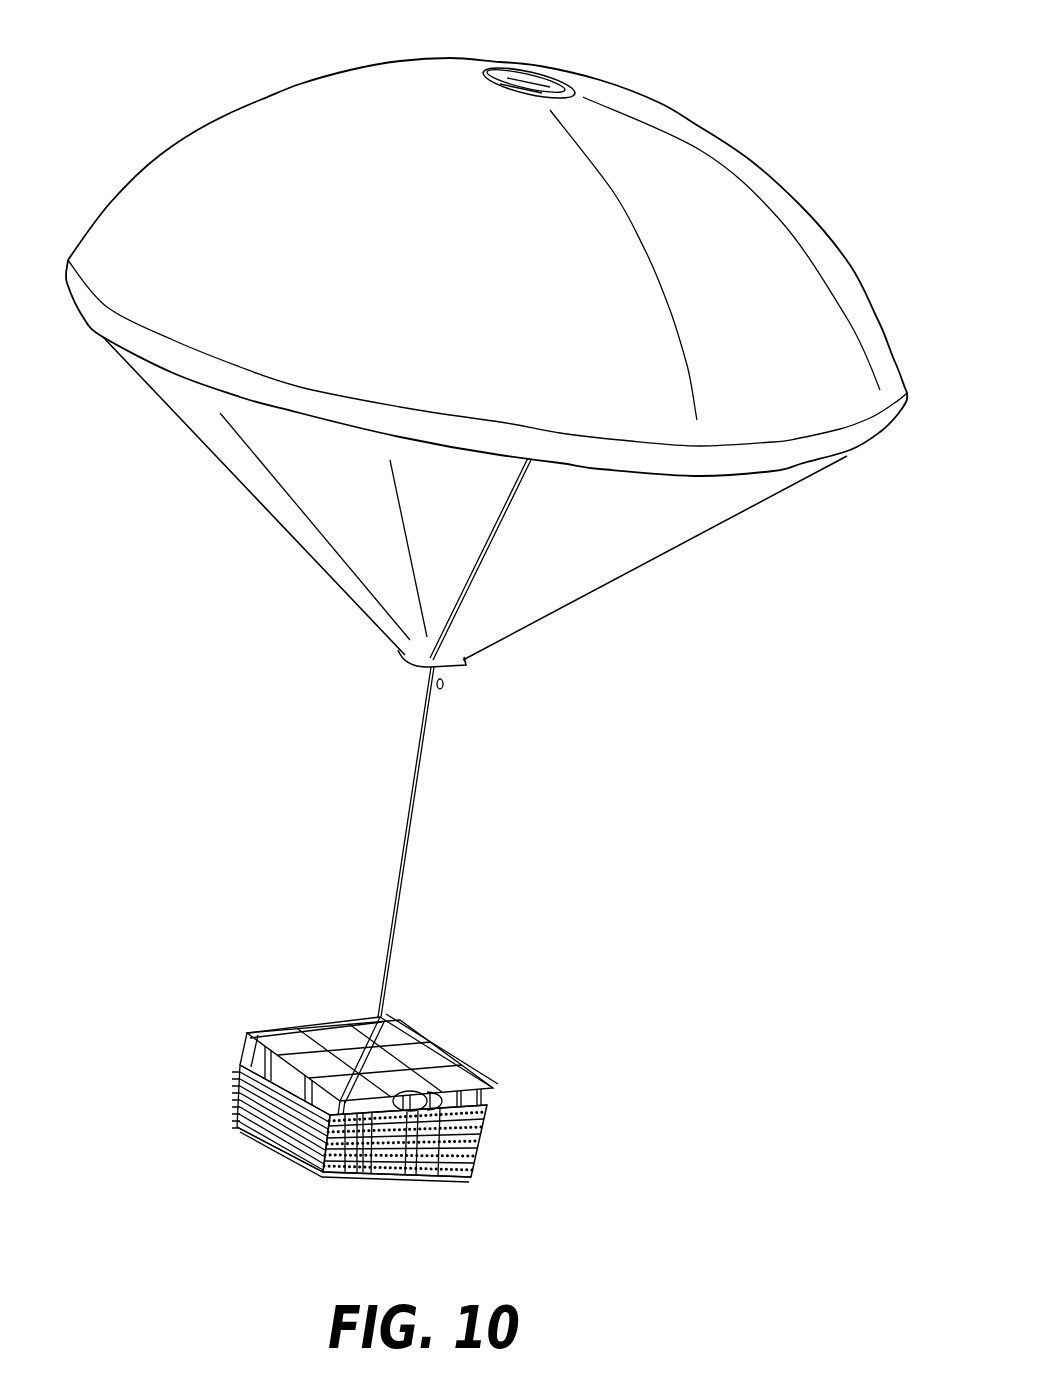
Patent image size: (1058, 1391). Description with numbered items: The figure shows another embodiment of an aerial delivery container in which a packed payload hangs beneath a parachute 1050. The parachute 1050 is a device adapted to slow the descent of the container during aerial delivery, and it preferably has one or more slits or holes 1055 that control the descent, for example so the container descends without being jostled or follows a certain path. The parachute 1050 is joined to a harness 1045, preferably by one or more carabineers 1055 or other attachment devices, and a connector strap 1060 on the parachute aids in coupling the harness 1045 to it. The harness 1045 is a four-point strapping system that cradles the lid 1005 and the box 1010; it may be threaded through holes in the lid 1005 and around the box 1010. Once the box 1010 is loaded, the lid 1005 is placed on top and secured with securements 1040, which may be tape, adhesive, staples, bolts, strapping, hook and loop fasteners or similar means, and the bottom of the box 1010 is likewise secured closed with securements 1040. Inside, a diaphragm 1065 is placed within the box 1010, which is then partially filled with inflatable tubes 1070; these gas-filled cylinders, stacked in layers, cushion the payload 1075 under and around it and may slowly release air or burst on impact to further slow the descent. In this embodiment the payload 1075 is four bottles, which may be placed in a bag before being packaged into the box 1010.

The lid 1005 is at (379, 1139).
The box 1010 is at (430, 1157).
The securements 1040 is at (491, 1089).
The harness 1045 is at (403, 848).
The parachute 1050 is at (277, 166).
The holes 1055 is at (552, 86).
The connector strap 1060 is at (466, 656).
The diaphragm 1065 is at (276, 1090).
The inflatable tubes 1070 is at (307, 1174).
The payload 1075 is at (444, 1072).